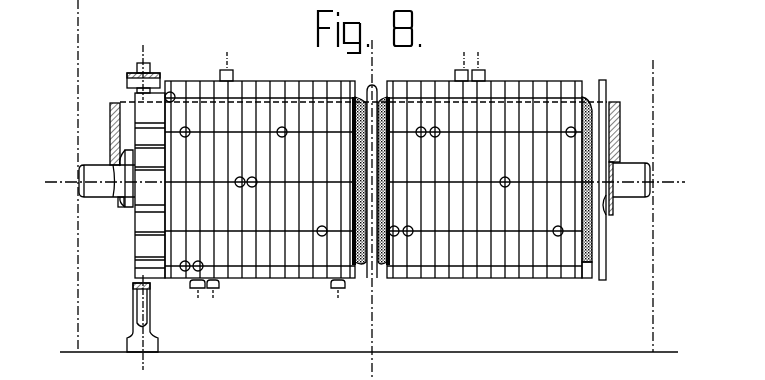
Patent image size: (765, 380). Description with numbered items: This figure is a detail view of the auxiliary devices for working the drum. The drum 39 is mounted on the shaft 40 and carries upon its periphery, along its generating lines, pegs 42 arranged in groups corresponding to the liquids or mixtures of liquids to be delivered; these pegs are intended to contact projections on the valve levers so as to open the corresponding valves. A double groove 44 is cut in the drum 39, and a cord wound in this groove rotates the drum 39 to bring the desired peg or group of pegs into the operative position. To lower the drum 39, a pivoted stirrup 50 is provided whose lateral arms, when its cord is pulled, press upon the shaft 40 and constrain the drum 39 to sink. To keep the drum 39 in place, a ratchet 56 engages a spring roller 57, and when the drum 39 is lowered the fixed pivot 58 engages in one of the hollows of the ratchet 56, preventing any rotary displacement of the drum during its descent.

The drum 39 is at (500, 97).
The shaft 40 is at (93, 177).
The pegs 42 is at (215, 290).
The double groove 44 is at (373, 273).
The stirrup 50 is at (111, 128).
The ratchet 56 is at (138, 232).
The spring roller 57 is at (147, 68).
The fixed pivot 58 is at (142, 305).